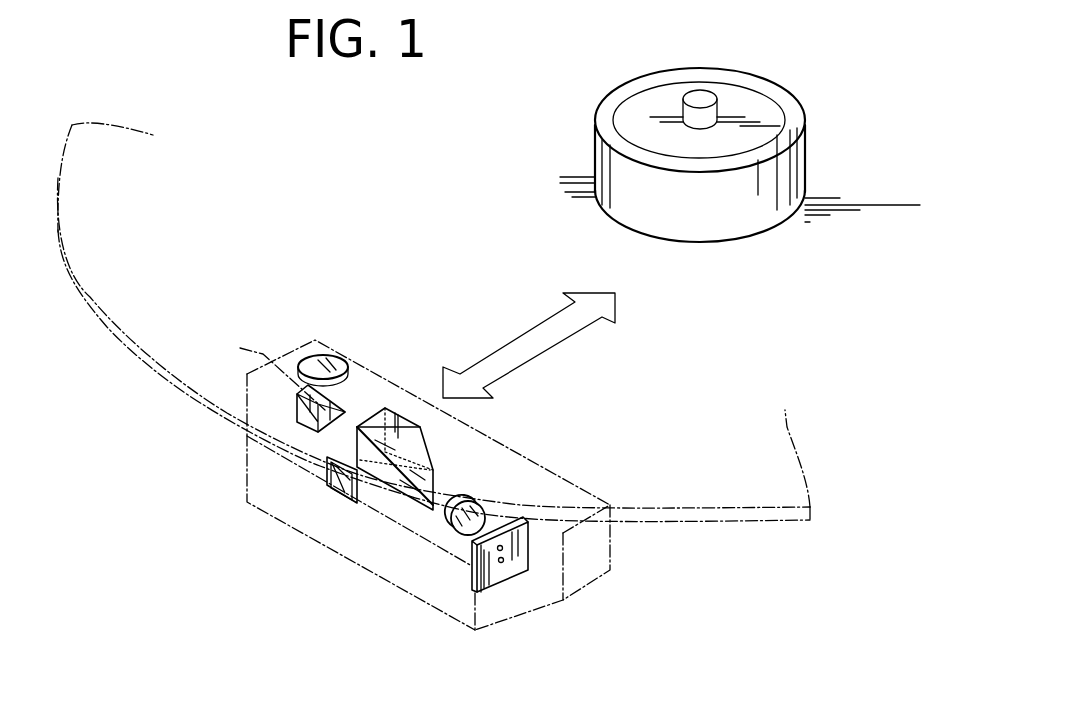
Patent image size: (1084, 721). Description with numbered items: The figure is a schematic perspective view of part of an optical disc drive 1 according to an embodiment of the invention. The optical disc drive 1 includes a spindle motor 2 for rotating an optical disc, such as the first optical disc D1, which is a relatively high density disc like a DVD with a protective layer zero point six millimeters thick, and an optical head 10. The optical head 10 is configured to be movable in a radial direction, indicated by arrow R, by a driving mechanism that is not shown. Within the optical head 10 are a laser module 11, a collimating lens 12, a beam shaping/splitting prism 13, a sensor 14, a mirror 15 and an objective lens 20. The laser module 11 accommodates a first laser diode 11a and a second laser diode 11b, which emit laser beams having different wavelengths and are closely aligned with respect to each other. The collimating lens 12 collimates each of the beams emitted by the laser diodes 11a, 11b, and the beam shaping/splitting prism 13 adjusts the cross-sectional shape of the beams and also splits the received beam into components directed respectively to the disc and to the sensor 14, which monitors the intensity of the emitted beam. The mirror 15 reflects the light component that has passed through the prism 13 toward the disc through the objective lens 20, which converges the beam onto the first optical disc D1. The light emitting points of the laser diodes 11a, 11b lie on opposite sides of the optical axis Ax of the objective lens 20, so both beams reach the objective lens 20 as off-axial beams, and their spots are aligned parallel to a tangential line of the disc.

The optical disc drive 1 is at (287, 567).
The spindle motor 2 is at (614, 102).
The optical head 10 is at (422, 602).
The laser module 11 is at (554, 593).
The first laser diode 11a is at (507, 550).
The second laser diode 11b is at (503, 562).
The collimating lens 12 is at (460, 528).
The beam shaping/splitting prism 13 is at (428, 451).
The sensor 14 is at (345, 493).
The mirror 15 is at (330, 405).
The objective lens 20 is at (333, 360).
The optical axis Ax is at (264, 371).
The radial direction R is at (550, 328).
The first optical disc D1 is at (727, 507).